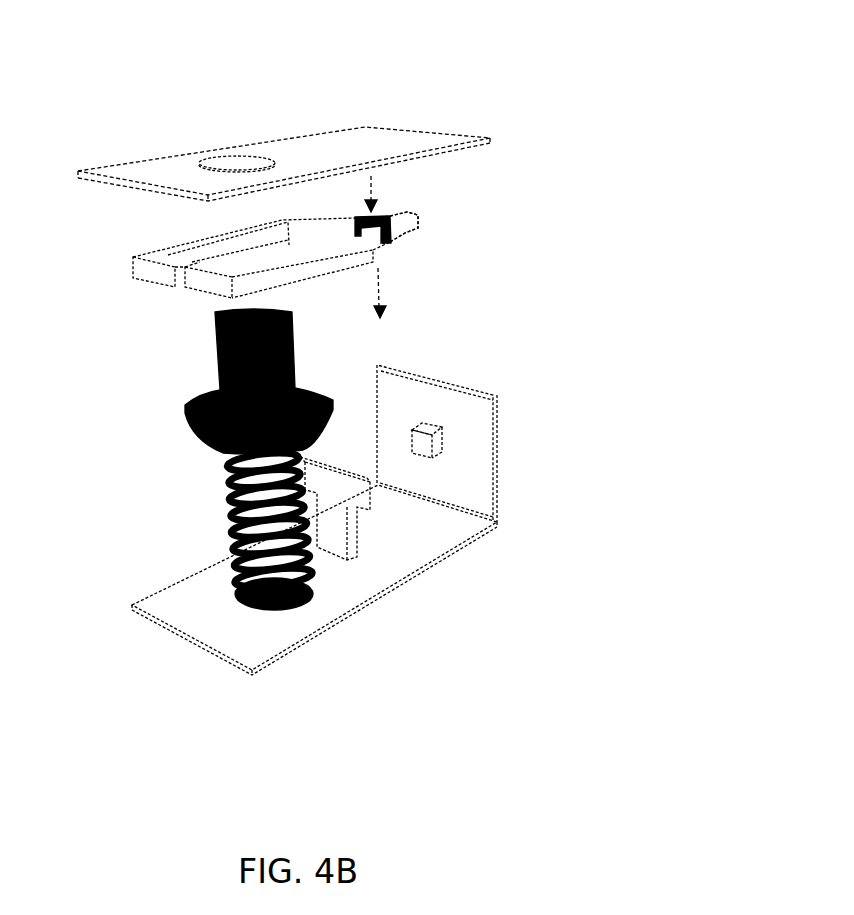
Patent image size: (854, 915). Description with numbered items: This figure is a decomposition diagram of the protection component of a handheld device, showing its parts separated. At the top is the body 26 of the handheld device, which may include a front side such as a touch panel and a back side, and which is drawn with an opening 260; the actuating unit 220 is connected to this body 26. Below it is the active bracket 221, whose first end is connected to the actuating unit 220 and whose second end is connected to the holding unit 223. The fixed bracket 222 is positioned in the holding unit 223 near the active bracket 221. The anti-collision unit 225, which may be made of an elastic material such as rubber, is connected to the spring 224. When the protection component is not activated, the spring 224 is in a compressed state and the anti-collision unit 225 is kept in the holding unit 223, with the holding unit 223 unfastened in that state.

The body 26 is at (381, 142).
The hole in cover plate 260 is at (233, 165).
The active bracket 221 is at (403, 232).
The holding unit 223 is at (290, 271).
The anti-collision unit 225 is at (218, 365).
The spring 224 is at (230, 517).
The actuating unit 220 is at (438, 440).
The fixed bracket 222 is at (332, 513).